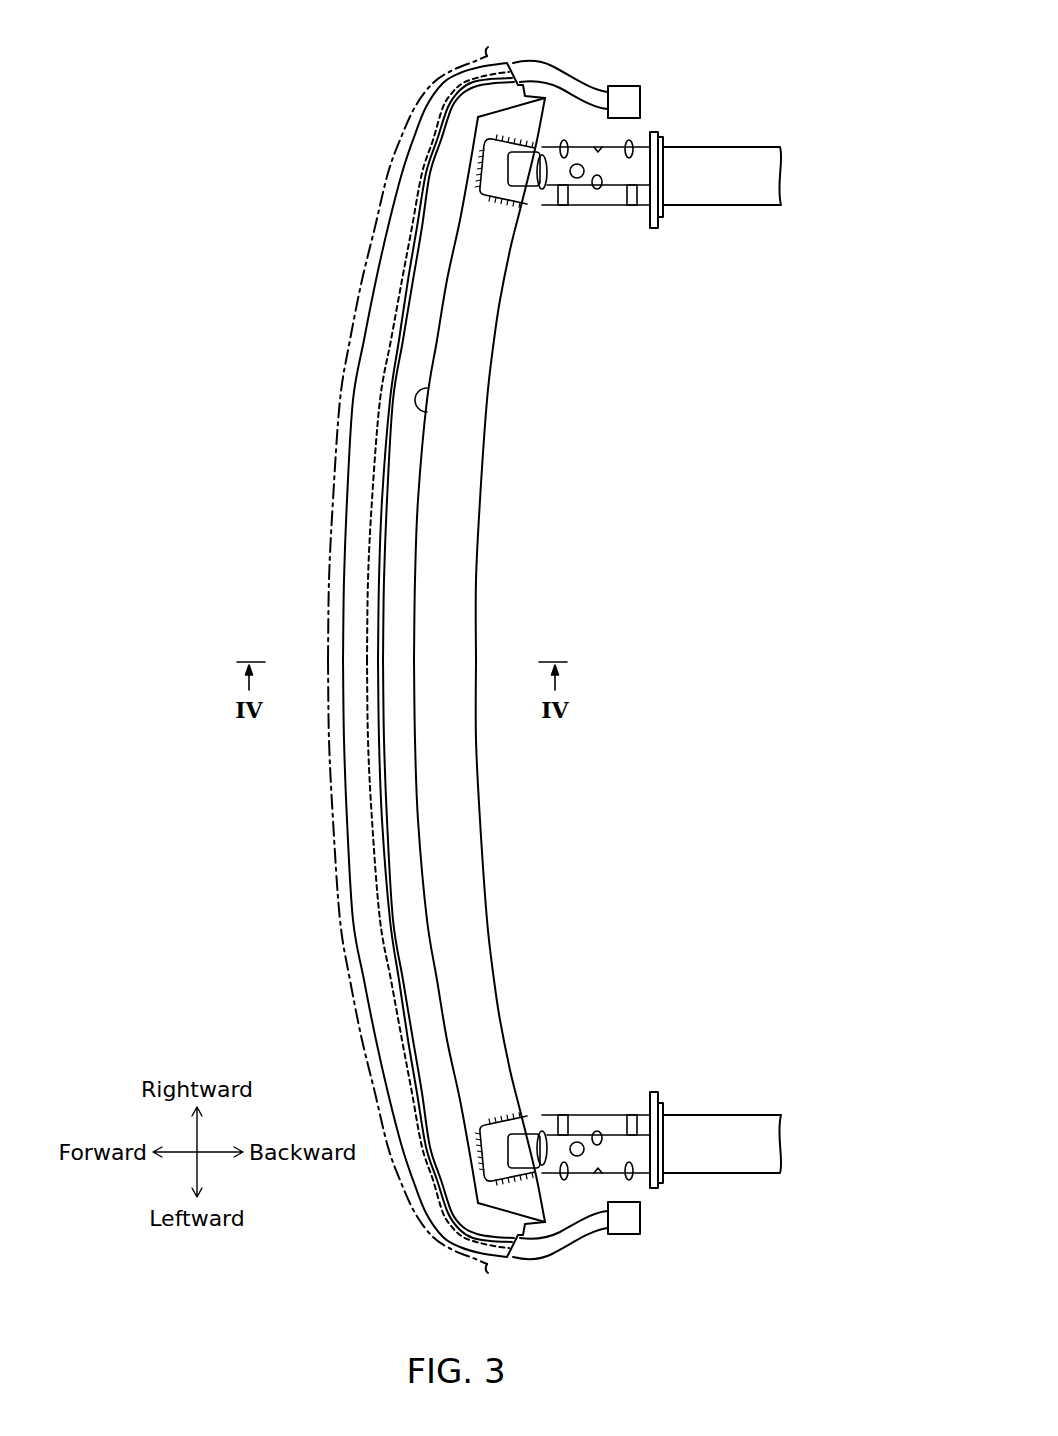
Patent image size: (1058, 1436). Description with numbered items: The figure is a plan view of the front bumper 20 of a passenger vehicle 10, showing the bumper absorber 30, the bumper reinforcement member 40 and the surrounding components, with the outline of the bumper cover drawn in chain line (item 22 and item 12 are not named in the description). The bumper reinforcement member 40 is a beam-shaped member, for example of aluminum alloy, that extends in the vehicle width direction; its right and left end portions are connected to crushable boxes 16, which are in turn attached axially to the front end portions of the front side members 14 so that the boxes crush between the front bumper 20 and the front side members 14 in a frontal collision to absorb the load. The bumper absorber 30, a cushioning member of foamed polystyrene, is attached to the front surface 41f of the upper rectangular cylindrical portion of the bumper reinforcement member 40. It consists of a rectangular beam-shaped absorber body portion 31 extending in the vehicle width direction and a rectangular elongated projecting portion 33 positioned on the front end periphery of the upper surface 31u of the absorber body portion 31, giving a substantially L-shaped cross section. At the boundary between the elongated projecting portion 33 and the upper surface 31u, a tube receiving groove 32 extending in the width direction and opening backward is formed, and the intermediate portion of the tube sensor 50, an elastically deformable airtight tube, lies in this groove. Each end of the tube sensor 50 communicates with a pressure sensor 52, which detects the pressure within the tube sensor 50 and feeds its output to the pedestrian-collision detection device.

The passenger vehicle 10 is at (527, 660).
The bumper 12 is at (629, 634).
The front side member 14 is at (740, 162).
The crushable box 16 is at (610, 192).
The front bumper 20 is at (371, 660).
The bumper cover 22 is at (372, 234).
The bumper absorber 30 is at (346, 467).
The absorber body portion 31 is at (412, 897).
The upper surface of absorber body portion 31u is at (400, 773).
The tube receiving groove 32 is at (380, 851).
The elongated projecting portion 33 is at (360, 800).
The bumper reinforcement member 40 is at (509, 660).
The front surface of upper rectangular cylindrical portion 41f is at (430, 412).
The tube sensor 50 is at (565, 77).
The pressure sensor 52 is at (624, 97).